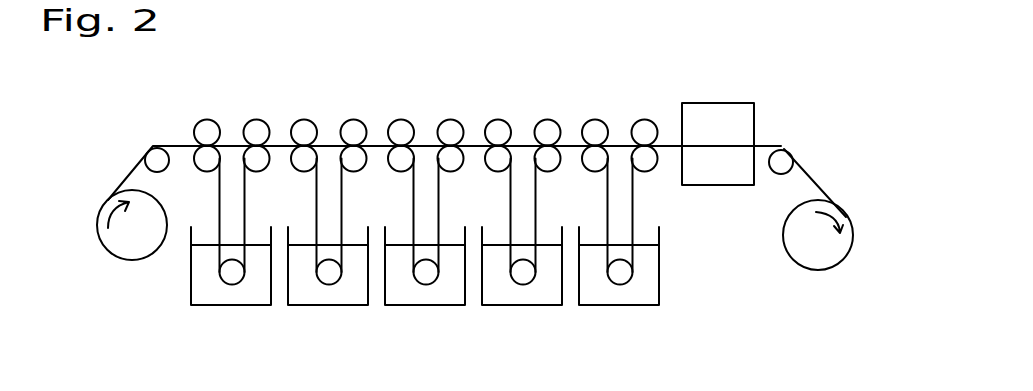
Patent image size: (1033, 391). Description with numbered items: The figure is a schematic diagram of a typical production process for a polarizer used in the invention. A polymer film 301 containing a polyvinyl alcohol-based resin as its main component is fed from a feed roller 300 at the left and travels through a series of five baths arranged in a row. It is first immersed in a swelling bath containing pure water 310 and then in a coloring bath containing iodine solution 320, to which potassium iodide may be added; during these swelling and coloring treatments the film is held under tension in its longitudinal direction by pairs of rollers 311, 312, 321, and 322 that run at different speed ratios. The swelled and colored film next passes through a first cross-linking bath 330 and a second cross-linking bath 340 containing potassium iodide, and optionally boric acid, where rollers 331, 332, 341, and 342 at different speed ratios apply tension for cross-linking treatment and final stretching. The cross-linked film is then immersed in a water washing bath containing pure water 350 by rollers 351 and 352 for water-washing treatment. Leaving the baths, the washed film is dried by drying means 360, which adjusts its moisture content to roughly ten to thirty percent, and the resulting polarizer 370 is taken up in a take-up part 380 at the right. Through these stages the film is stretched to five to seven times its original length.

The feed roller 300 is at (113, 243).
The polymer film 301 is at (130, 173).
The swelling bath 310 is at (230, 297).
The roller 311 is at (208, 129).
The roller 312 is at (258, 129).
The coloring bath 320 is at (337, 297).
The roller 321 is at (305, 129).
The roller 322 is at (354, 129).
The first cross-linking bath 330 is at (434, 297).
The roller 331 is at (402, 129).
The roller 332 is at (452, 129).
The second cross-linking bath 340 is at (531, 297).
The roller 341 is at (499, 129).
The roller 342 is at (548, 129).
The water washing bath 350 is at (628, 297).
The roller 351 is at (596, 129).
The roller 352 is at (646, 129).
The drying means 360 is at (716, 121).
The polarizer 370 is at (812, 179).
The take-up part 380 is at (836, 254).